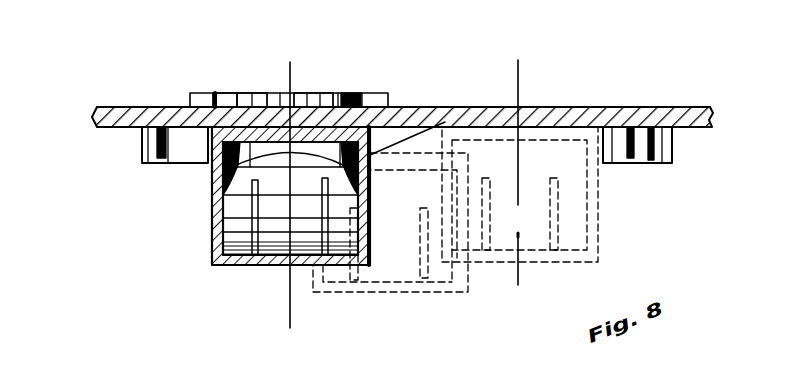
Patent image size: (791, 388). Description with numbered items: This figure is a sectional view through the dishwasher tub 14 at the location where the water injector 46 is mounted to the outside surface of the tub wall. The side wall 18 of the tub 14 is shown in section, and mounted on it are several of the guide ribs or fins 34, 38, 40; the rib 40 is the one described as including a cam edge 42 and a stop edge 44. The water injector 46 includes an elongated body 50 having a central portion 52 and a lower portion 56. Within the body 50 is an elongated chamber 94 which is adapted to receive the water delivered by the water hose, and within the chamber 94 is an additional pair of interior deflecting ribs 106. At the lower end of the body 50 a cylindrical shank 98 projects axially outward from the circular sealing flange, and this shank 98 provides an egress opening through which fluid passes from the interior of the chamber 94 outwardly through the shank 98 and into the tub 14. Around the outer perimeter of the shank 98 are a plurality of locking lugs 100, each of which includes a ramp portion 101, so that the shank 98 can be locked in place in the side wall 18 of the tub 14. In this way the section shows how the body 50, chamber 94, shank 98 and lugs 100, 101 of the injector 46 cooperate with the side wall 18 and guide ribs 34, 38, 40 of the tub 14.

The tub 14 is at (577, 106).
The side wall 18 is at (563, 106).
The guide rib 34 is at (637, 153).
The guide rib 38 is at (157, 162).
The guide rib 40 is at (413, 107).
The cam edge 42 is at (380, 152).
The stop edge 44 is at (368, 184).
The water injector 46 is at (291, 322).
The elongated body 50 is at (205, 243).
The central portion 52 is at (212, 220).
The lower portion 56 is at (312, 92).
The elongated chamber 94 is at (243, 200).
The cylindrical shank 98 is at (251, 92).
The locking lugs 100 is at (271, 92).
The ramp portion 101 is at (208, 92).
The interior deflecting ribs 106 is at (312, 230).